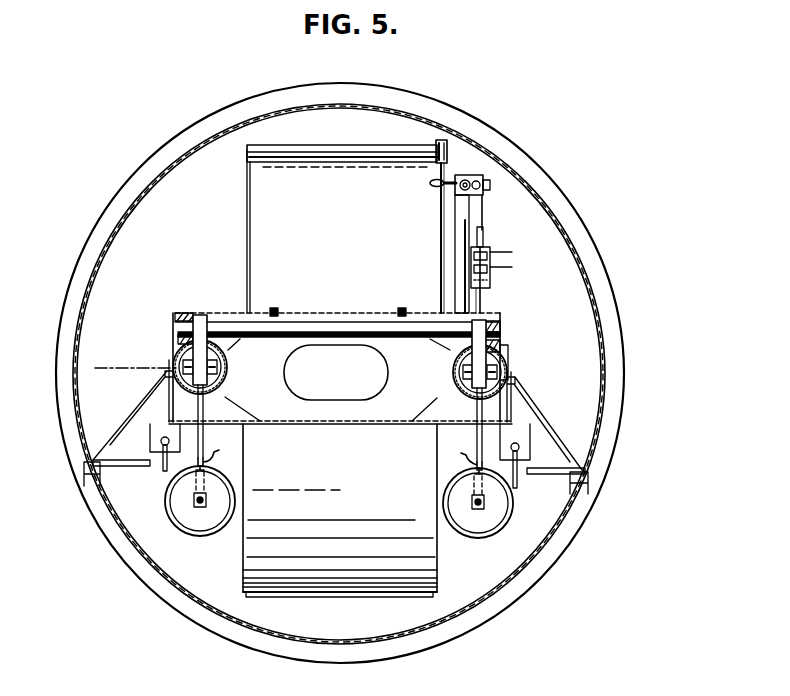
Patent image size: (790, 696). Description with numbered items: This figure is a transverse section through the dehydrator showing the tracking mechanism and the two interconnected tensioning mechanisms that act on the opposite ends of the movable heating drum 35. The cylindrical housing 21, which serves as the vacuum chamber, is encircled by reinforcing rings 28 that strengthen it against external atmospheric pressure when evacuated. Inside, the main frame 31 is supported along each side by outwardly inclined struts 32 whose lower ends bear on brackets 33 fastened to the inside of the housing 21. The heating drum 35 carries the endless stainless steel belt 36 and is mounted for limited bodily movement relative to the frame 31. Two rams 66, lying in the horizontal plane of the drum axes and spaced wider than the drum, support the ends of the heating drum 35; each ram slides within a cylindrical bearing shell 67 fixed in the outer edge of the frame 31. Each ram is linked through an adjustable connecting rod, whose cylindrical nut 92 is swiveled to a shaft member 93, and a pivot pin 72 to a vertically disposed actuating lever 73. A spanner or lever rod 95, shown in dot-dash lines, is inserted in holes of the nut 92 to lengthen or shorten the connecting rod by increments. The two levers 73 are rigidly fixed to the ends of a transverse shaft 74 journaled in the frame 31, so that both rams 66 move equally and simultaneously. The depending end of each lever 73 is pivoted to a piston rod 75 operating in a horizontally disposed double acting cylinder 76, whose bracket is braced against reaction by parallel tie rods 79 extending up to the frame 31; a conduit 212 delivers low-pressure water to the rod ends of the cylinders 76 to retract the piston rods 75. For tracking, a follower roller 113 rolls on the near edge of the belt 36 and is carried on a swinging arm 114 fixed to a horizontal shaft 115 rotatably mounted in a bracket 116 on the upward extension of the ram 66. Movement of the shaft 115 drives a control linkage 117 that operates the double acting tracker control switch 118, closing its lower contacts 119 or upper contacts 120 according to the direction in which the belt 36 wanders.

The housing 21 is at (175, 162).
The reinforcing rings 28 is at (505, 163).
The main frame 31 is at (356, 318).
The struts 32 is at (125, 425).
The brackets 33 is at (92, 472).
The heating drum 35 is at (246, 216).
The endless material conveying belt 36 is at (318, 149).
The rams 66 is at (222, 354).
The cylindrical bearing shell 67 is at (222, 368).
The pivot pin 72 is at (176, 366).
The actuating lever 73 is at (198, 430).
The transverse shaft 74 is at (416, 320).
The piston rod 75 is at (196, 502).
The double acting cylinder 76 is at (201, 536).
The tie rods 79 is at (163, 468).
The cylindrical nut 92 is at (222, 386).
The shaft member 93 is at (500, 348).
The lever rod 95 is at (116, 365).
The follower roller 113 is at (436, 150).
The swinging arm 114 is at (430, 182).
The horizontal shaft 115 is at (483, 175).
The bracket 116 is at (455, 258).
The control linkage 117 is at (483, 220).
The tracker control switch 118 is at (519, 270).
The lower contacts 119 is at (488, 282).
The upper contacts 120 is at (490, 253).
The conduit 212 is at (210, 458).